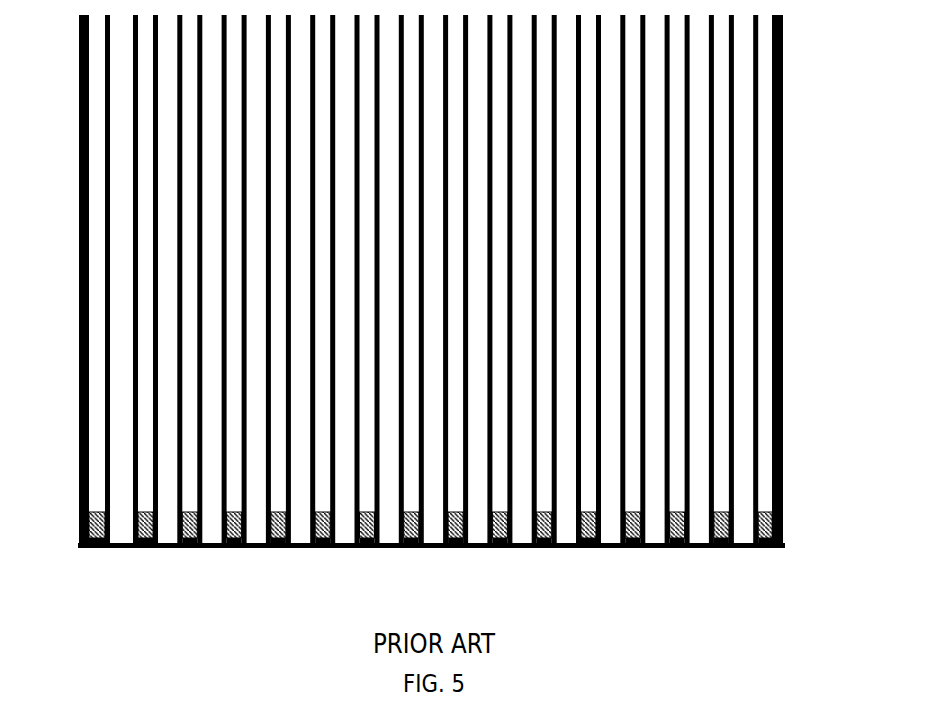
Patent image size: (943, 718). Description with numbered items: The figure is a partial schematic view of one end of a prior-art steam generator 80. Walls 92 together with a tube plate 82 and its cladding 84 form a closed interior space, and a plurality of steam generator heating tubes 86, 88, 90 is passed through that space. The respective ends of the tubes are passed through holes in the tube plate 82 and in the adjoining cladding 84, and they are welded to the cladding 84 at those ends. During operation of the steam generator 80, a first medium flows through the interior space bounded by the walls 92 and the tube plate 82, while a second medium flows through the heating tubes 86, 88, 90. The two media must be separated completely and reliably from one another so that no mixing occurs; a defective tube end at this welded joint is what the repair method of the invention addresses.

The steam generator 80 is at (432, 312).
The tube plate 82 is at (783, 512).
The cladding 84 is at (100, 548).
The steam generator heating tube 86 is at (168, 529).
The steam generator heating tube 88 is at (213, 529).
The steam generator heating tube 90 is at (258, 529).
The walls 92 is at (80, 447).